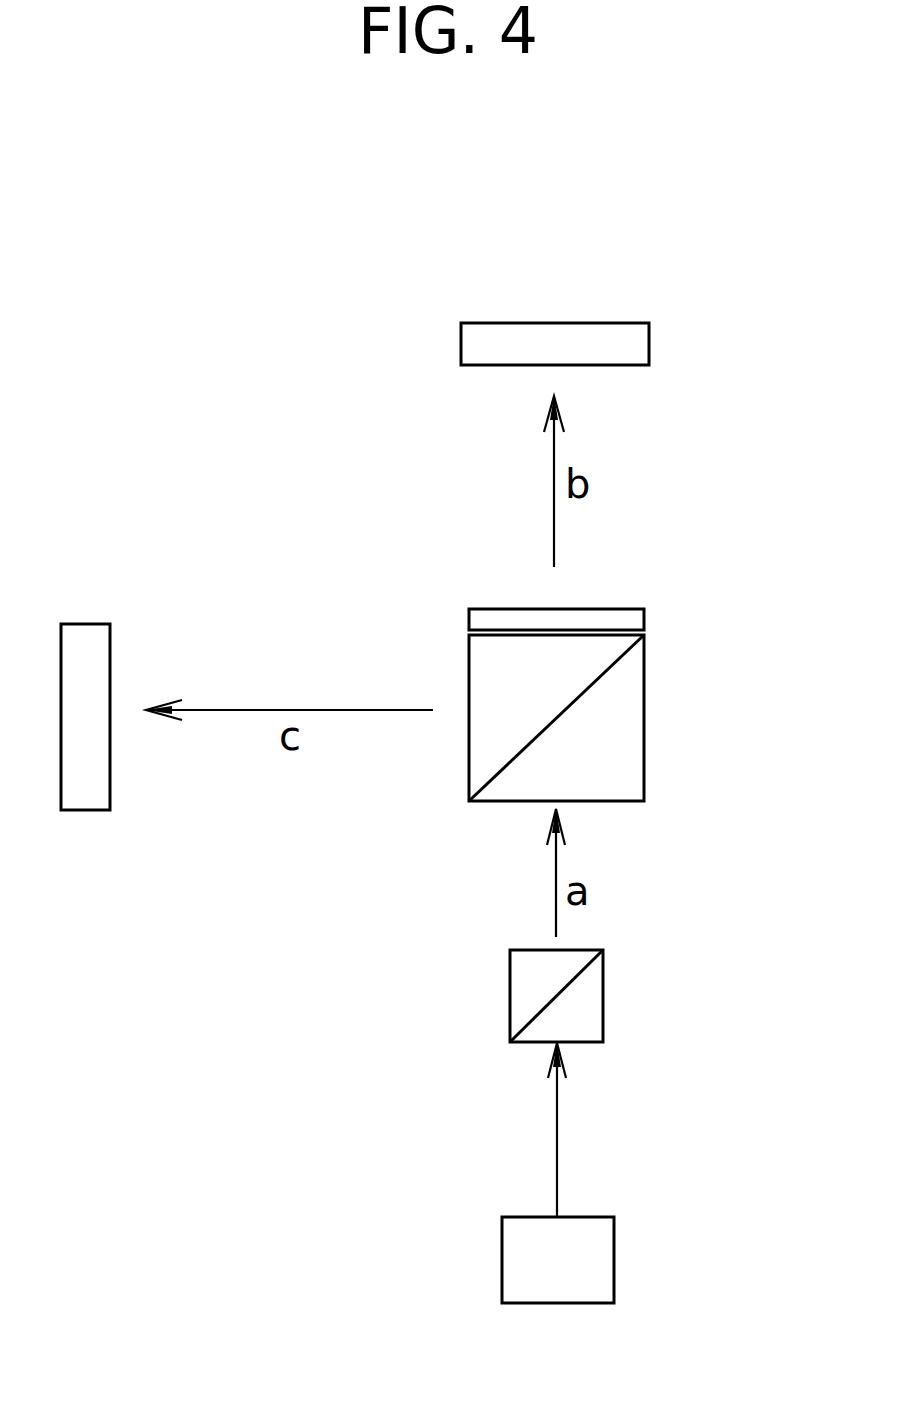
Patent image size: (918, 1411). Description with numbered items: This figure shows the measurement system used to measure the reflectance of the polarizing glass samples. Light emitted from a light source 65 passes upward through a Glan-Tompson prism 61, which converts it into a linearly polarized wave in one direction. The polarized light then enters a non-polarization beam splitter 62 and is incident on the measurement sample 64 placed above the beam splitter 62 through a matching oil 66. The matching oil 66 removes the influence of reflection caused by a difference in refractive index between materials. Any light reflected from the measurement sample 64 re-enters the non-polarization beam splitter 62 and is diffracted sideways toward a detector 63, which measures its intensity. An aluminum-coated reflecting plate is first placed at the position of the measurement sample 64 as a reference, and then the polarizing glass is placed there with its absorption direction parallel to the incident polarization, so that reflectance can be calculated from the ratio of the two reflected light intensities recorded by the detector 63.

The Glan-Tompson prism 61 is at (597, 1005).
The non-polarization beam splitter 62 is at (636, 758).
The detector 63 is at (649, 343).
The measurement sample 64 is at (611, 618).
The light source 65 is at (605, 1263).
The matching oil 66 is at (641, 634).